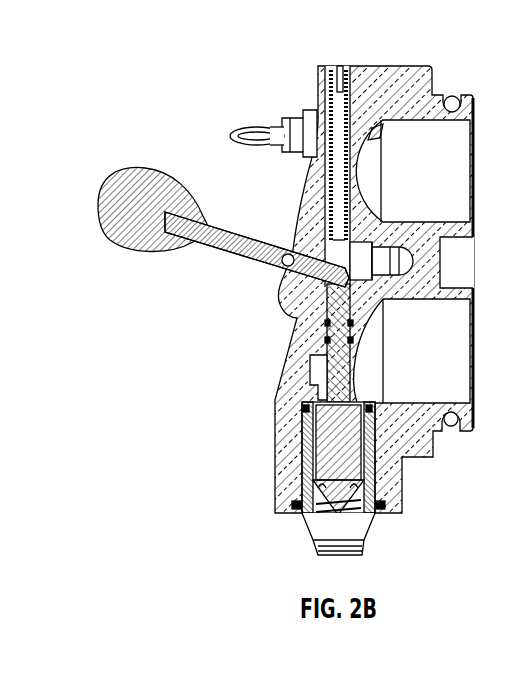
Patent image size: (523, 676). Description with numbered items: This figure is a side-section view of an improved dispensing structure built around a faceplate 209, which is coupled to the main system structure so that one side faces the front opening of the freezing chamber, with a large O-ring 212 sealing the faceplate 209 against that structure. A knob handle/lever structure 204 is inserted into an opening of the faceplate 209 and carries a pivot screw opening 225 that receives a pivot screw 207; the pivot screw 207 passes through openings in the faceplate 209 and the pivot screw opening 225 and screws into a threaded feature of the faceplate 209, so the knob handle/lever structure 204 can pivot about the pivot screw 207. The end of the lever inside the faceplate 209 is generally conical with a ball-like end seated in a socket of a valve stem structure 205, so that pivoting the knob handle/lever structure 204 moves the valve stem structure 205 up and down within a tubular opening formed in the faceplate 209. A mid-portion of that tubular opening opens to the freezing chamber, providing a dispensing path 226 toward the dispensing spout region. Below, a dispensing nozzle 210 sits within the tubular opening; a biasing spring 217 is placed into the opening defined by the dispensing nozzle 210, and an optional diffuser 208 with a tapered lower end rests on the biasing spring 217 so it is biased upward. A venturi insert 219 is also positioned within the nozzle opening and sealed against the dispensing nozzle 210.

The faceplate 209 is at (268, 51).
The large O-ring 212 is at (452, 96).
The knob handle/lever structure 204 is at (108, 178).
The pivot screw 207 is at (280, 248).
The pivot screw opening 225 is at (283, 265).
The valve stem structure 205 is at (337, 380).
The dispensing path 226 is at (370, 367).
The venturi insert 219 is at (302, 412).
The diffuser 208 is at (353, 460).
The biasing spring 217 is at (310, 517).
The dispensing nozzle 210 is at (377, 530).